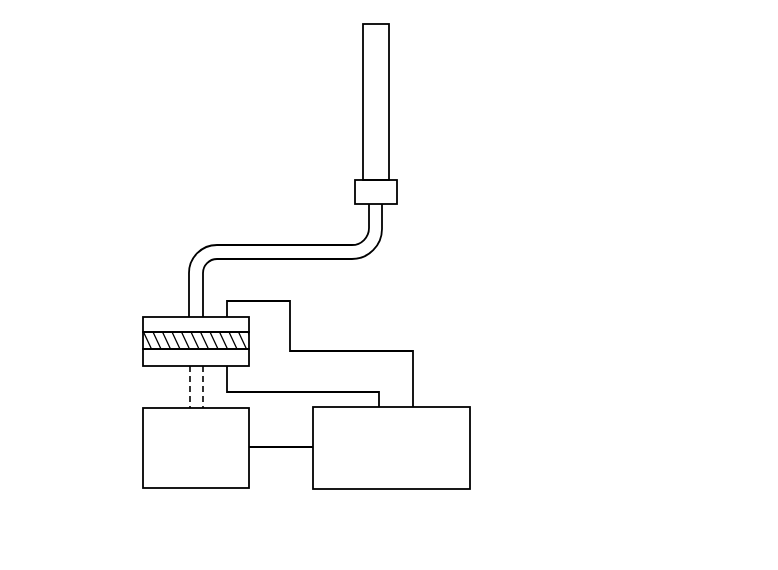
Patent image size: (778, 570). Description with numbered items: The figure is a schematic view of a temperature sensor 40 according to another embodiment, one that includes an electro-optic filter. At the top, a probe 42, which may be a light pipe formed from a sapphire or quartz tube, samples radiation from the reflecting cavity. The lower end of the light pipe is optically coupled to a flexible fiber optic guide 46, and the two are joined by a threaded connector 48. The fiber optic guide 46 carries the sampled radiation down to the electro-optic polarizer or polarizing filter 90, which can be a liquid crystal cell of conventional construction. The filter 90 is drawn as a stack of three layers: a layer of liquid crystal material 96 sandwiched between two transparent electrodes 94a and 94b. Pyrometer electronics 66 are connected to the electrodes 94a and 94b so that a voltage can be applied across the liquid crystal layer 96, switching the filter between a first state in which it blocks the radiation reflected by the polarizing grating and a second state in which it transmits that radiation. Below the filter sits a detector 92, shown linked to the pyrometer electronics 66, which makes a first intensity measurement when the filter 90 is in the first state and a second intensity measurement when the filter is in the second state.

The temperature sensor 40 is at (440, 49).
The probe 42 is at (389, 127).
The threaded connector 48 is at (397, 192).
The fiber optic guide 46 is at (313, 260).
The electro-optic filter 90 is at (149, 341).
The transparent electrode 94a is at (143, 326).
The liquid crystal material layer 96 is at (143, 342).
The transparent electrode 94b is at (143, 357).
The detector 92 is at (212, 458).
The pyrometer electronics 66 is at (412, 458).